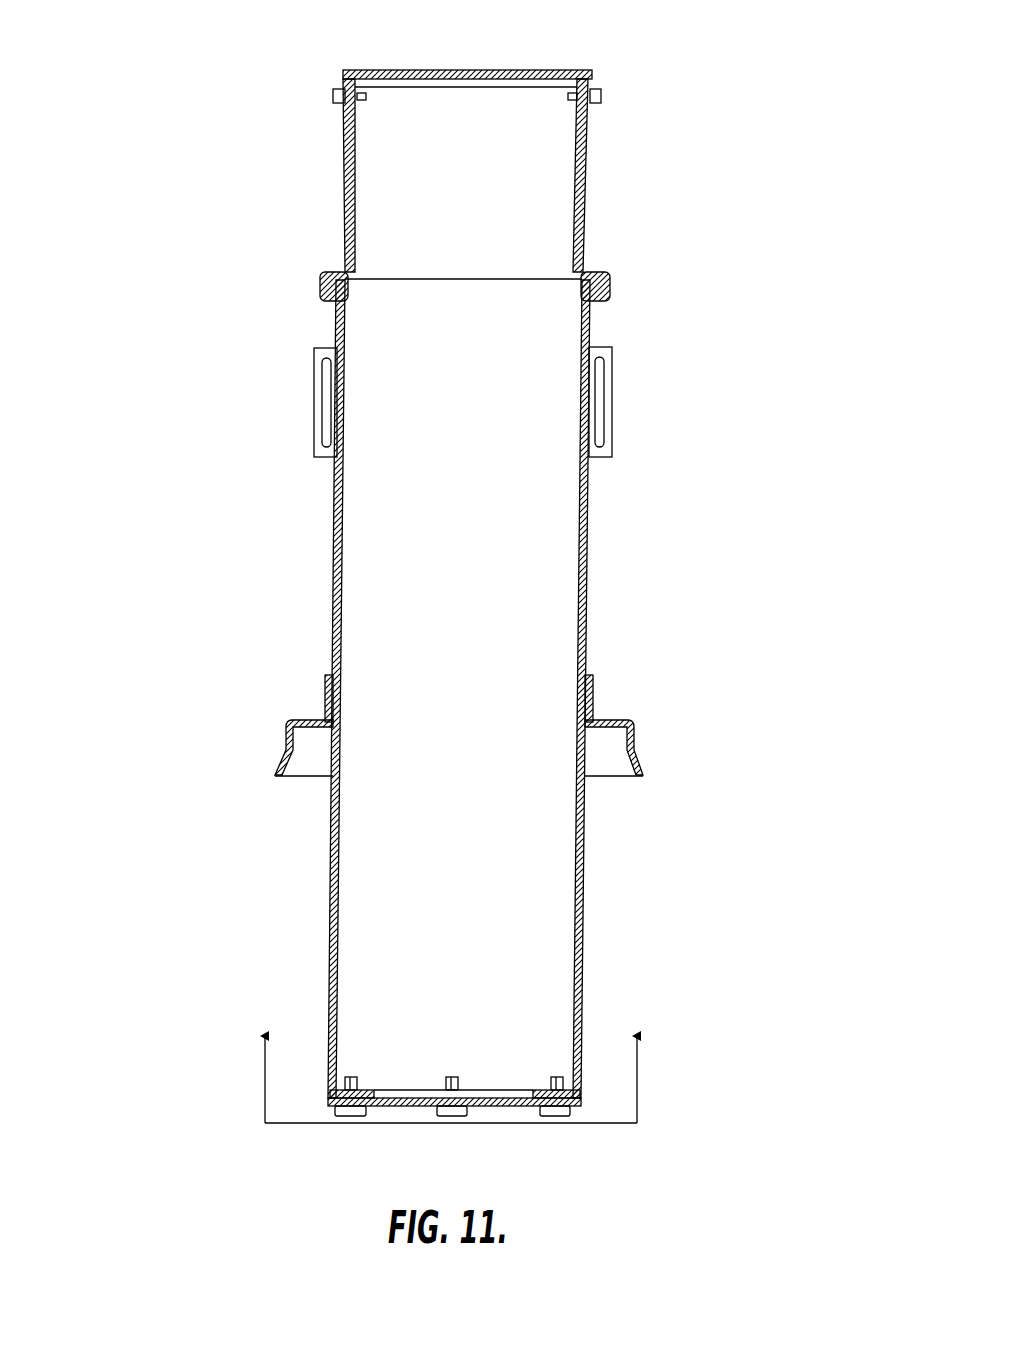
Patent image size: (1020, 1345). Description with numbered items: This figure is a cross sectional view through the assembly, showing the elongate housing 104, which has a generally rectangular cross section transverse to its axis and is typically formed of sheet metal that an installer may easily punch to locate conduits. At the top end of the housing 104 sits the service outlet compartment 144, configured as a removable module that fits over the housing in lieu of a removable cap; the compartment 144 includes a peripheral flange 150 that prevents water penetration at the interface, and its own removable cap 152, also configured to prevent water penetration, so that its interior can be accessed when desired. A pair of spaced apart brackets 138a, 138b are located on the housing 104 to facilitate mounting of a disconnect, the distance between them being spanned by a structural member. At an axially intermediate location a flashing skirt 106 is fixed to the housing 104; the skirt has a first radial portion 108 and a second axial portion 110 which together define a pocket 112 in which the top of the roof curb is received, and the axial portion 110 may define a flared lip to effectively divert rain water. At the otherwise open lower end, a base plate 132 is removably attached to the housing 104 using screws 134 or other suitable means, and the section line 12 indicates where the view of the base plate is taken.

The removable cap 152 is at (425, 75).
The service outlet compartment 144 is at (585, 178).
The peripheral flange 150 is at (610, 292).
The bracket 138a is at (613, 413).
The bracket 138b is at (313, 398).
The housing 104 is at (336, 572).
The first radial portion 108 is at (612, 712).
The flashing skirt 106 is at (640, 730).
The second axial portion 110 is at (640, 757).
The pocket 112 is at (608, 757).
The base plate 132 is at (405, 1107).
The screws 134 is at (350, 1117).
The section line 12- 12 is at (455, 1051).